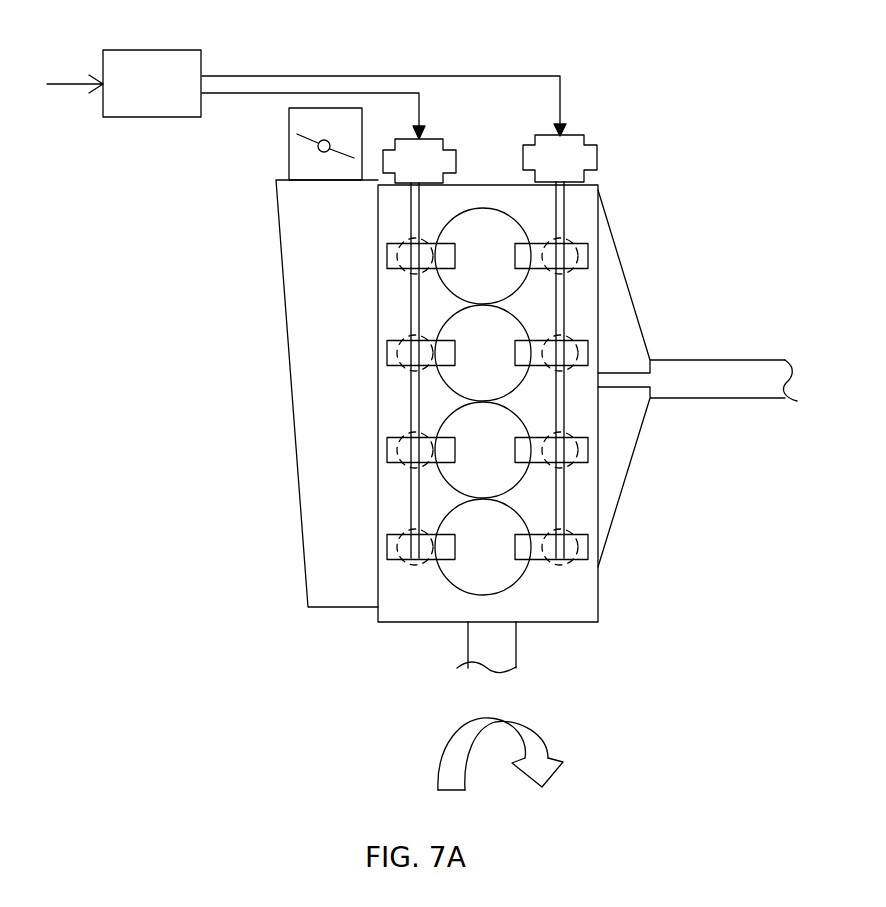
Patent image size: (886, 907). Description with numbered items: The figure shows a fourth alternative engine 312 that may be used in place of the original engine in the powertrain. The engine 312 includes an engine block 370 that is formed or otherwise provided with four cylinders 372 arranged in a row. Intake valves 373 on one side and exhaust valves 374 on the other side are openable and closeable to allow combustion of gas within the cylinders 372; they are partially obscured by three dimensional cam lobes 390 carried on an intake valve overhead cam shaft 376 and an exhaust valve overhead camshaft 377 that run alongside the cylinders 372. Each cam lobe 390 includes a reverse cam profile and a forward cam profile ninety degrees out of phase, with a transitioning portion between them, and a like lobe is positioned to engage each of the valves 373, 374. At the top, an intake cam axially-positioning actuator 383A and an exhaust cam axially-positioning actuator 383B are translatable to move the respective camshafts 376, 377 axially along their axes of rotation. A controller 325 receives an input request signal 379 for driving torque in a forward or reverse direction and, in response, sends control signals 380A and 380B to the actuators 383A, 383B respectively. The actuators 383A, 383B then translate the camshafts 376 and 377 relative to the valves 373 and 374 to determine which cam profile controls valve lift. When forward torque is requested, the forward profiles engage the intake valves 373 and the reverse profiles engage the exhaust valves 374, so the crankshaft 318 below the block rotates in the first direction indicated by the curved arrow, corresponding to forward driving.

The engine 312 is at (650, 181).
The crankshaft 318 is at (516, 648).
The controller 325 is at (176, 98).
The engine block 370 is at (580, 623).
The cylinders 372 is at (458, 297).
The intake valves 373 is at (398, 243).
The exhaust valves 374 is at (588, 244).
The intake valve overhead cam shaft 376 is at (411, 502).
The exhaust valve overhead camshaft 377 is at (565, 497).
The input request signal 379 is at (75, 83).
The control signal 380A is at (258, 94).
The control signal 380B is at (239, 75).
The intake cam axially-positioning actuator 383A is at (442, 135).
The exhaust cam axially-positioning actuator 383B is at (578, 134).
The three dimensional cam lobes 390 is at (387, 256).